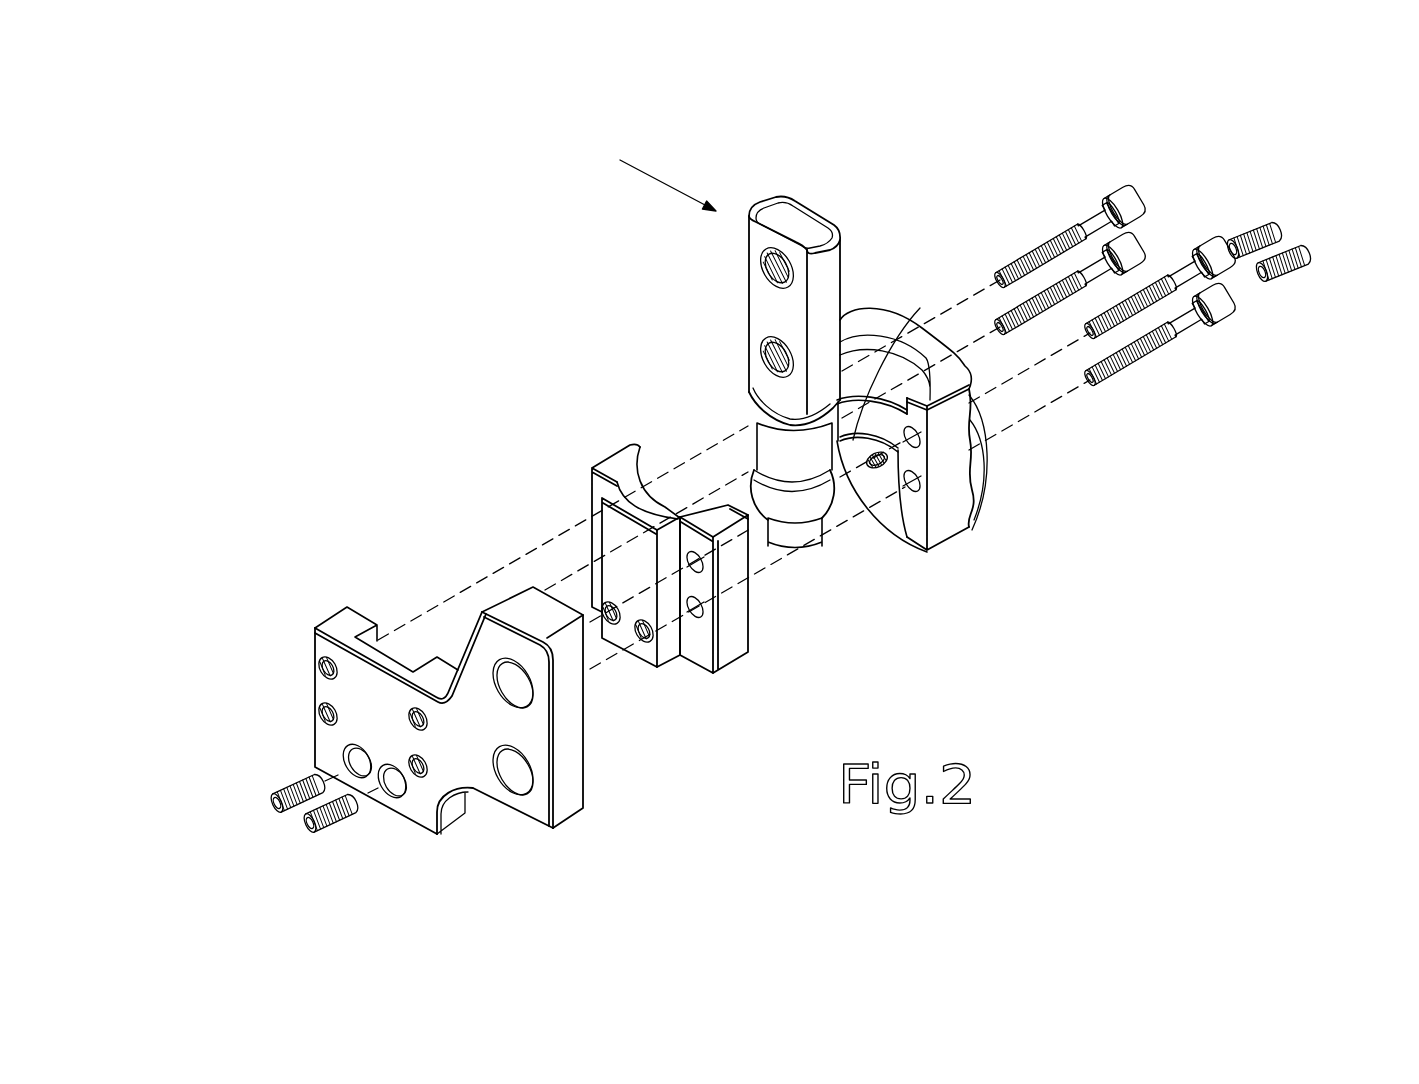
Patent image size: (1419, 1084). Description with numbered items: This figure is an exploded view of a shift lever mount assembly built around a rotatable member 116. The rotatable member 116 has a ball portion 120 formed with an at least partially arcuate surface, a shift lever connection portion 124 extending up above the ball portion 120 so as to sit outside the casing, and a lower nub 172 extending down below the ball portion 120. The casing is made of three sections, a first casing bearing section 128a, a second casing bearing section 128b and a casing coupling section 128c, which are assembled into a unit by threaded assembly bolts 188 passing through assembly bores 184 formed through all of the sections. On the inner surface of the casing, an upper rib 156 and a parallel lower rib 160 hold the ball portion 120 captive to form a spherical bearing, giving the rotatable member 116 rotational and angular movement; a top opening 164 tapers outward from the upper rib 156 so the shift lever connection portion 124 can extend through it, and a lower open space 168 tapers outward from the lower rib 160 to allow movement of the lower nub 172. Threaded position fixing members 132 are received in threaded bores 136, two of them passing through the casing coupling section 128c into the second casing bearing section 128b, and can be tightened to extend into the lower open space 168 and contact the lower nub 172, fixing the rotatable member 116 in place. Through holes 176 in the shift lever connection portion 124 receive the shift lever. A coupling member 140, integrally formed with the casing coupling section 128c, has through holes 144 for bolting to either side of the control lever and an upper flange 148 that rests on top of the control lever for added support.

The rotatable member 116 is at (645, 171).
The ball portion 120 is at (879, 559).
The shift lever connection portion 124 is at (760, 267).
The first casing bearing section 128a is at (996, 387).
The second casing bearing section 128b is at (633, 565).
The casing coupling section 128c is at (441, 698).
The threaded position fixing members 132 is at (1312, 244).
The threaded bores 136 is at (615, 625).
The coupling member 140 is at (545, 832).
The through holes 144 is at (510, 893).
The upper flange 148 is at (543, 617).
The upper rib 156 is at (876, 360).
The lower rib 160 is at (853, 470).
The top opening 164 is at (963, 363).
The lower open space 168 is at (905, 483).
The lower nub 172 is at (793, 537).
The through holes 176 is at (765, 345).
The assembly bores 184 is at (413, 893).
The threaded assembly bolts 188 is at (1223, 307).